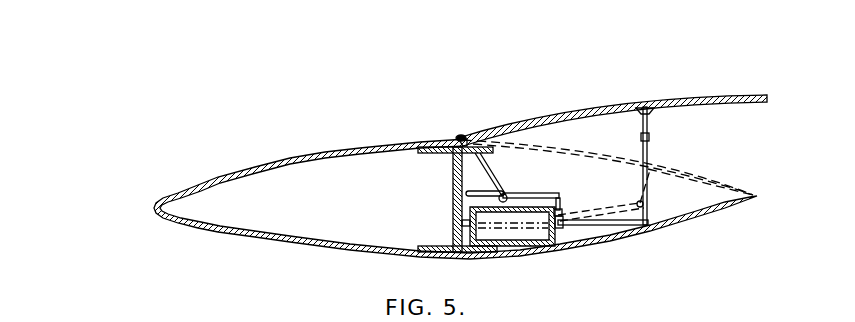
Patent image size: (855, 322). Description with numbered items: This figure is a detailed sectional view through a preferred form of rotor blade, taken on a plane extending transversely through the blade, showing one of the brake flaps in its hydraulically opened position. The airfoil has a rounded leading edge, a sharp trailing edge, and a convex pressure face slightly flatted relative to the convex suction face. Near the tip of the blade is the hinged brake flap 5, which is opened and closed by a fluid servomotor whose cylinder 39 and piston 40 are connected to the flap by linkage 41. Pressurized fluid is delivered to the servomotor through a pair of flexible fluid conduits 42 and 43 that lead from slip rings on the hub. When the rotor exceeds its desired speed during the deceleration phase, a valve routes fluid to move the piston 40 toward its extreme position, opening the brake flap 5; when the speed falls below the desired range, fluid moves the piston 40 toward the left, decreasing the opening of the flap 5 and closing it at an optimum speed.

The brake flap 5 is at (603, 103).
The fluid servomotor cylinder 39 is at (564, 221).
The piston 40 is at (546, 231).
The linkage 41 is at (637, 201).
The flexible fluid conduit 42 is at (534, 194).
The flexible fluid conduit 43 is at (453, 218).